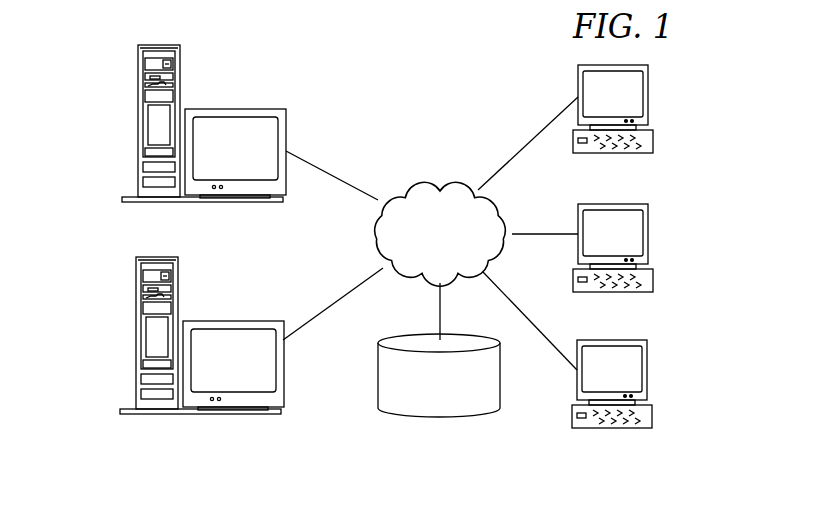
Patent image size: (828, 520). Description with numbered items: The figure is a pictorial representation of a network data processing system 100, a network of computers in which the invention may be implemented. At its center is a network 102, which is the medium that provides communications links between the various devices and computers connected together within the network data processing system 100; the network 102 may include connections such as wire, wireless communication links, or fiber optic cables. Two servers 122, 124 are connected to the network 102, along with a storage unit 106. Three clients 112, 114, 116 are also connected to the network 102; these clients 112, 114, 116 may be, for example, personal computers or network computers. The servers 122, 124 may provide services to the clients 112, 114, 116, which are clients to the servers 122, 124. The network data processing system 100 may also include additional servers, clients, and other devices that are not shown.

The network data processing system 100 is at (492, 70).
The network 102 is at (412, 190).
The storage unit 106 is at (424, 418).
The client 112 is at (648, 96).
The client 114 is at (648, 234).
The client 116 is at (646, 370).
The server 122 is at (137, 122).
The server 124 is at (137, 334).